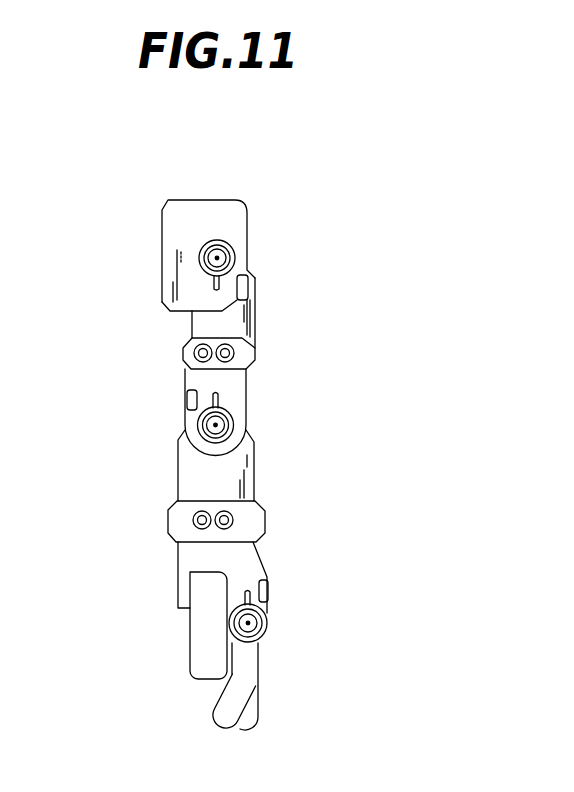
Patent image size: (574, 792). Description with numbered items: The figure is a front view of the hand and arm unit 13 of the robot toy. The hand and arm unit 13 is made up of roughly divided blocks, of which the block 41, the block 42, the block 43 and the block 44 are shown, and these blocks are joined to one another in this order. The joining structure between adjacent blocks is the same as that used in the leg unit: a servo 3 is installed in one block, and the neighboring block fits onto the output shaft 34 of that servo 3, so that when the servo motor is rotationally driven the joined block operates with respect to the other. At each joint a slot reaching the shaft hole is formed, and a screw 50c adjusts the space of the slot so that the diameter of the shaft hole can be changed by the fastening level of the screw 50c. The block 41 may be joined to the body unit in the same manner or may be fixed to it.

The hand and arm unit 13 is at (197, 191).
The block 41 is at (232, 220).
The block 42 is at (248, 380).
The block 43 is at (256, 513).
The block 44 is at (250, 672).
The output shaft 34 is at (199, 253).
The servo 3 is at (222, 254).
The screw 50c is at (243, 284).